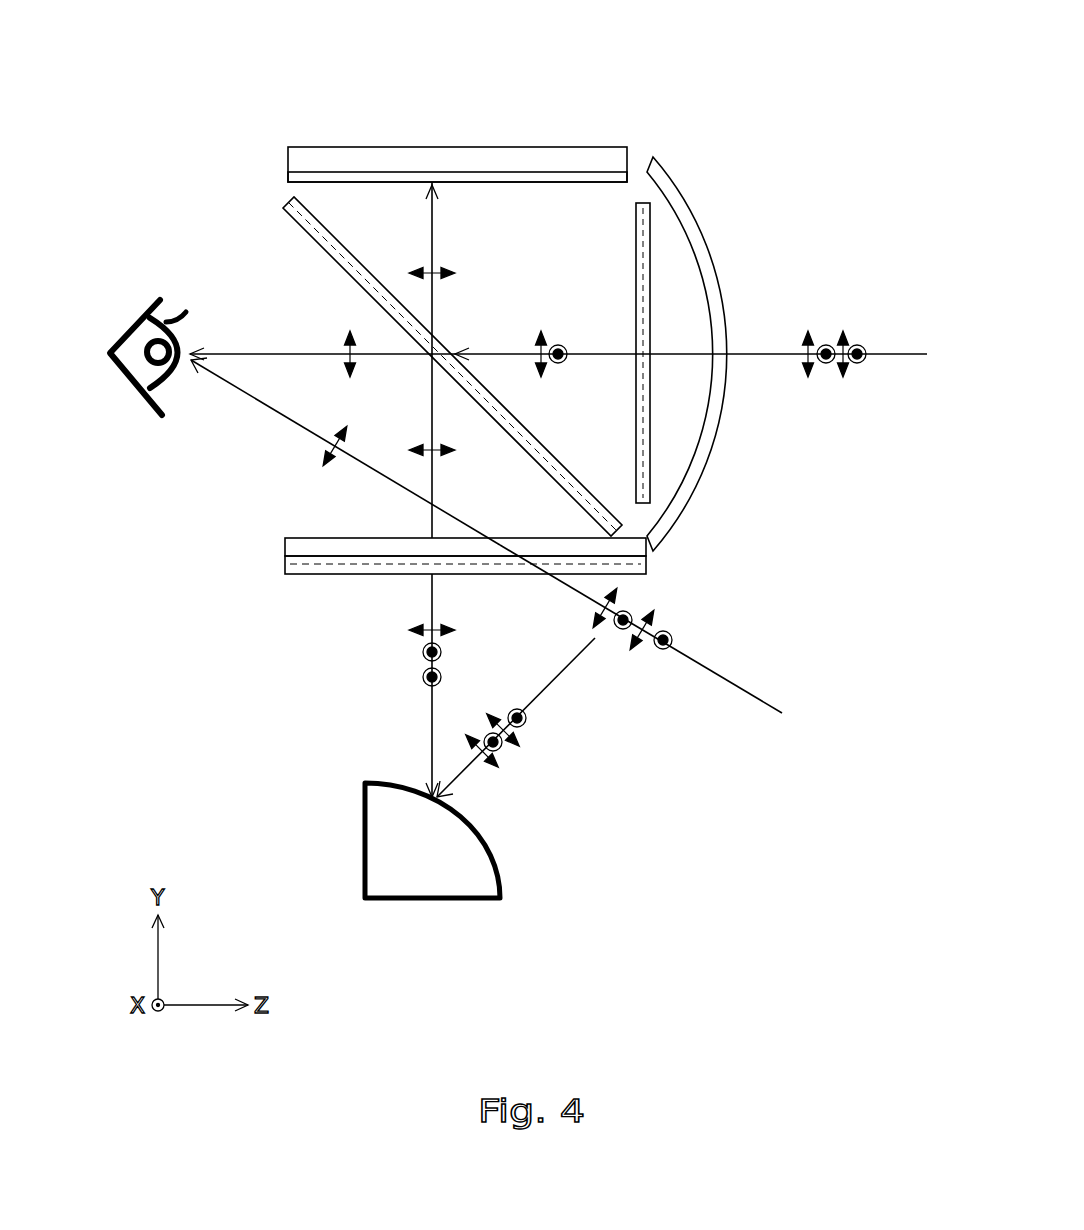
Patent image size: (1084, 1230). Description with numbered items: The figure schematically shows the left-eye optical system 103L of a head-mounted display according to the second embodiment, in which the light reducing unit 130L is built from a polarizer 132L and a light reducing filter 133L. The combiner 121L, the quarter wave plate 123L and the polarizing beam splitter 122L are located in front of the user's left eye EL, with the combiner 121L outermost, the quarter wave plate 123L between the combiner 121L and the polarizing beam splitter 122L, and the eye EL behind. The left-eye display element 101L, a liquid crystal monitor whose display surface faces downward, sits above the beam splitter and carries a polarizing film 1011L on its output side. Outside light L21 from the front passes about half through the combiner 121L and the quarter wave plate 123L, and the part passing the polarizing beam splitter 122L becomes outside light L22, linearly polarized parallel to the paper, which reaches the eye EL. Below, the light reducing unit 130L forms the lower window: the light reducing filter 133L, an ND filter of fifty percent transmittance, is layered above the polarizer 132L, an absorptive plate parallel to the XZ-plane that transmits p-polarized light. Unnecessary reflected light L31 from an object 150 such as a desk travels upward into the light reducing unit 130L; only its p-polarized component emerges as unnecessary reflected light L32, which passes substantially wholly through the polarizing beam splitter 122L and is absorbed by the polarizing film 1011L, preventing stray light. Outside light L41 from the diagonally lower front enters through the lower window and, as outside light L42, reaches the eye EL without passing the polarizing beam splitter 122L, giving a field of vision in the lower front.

The left-eye display element 101L is at (385, 147).
The polarizing film 1011L is at (568, 172).
The left-eye optical system 103L is at (499, 290).
The polarizing beam splitter 122L is at (288, 203).
The 1/4 wave plate 123L is at (650, 245).
The combiner 121L is at (719, 280).
The light reducing filter 133L is at (285, 545).
The polarizer 132L is at (300, 565).
The light reducing unit 130L is at (374, 641).
The object 150 is at (497, 870).
The left eye EL is at (140, 393).
The outside light L21 is at (890, 357).
The outside light L22 is at (282, 353).
The unnecessary reflected light L31 is at (432, 718).
The unnecessary reflected light L32 is at (433, 472).
The outside light L41 is at (752, 695).
The outside light L42 is at (305, 430).